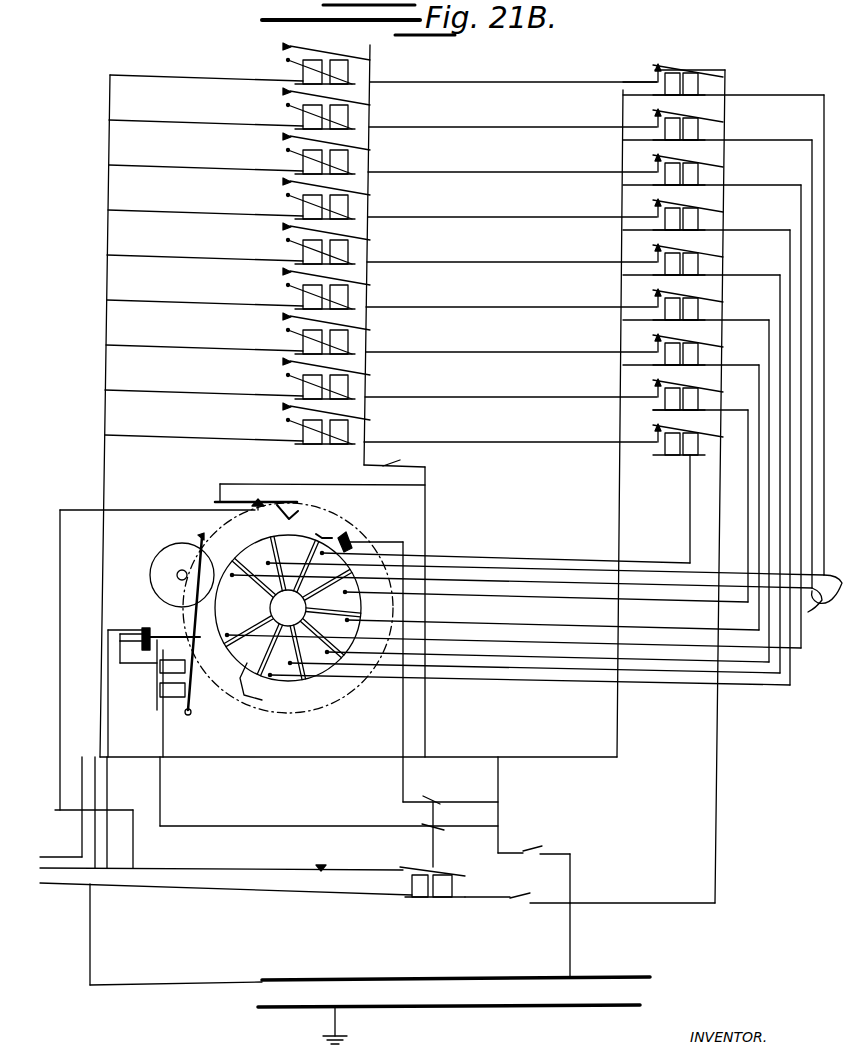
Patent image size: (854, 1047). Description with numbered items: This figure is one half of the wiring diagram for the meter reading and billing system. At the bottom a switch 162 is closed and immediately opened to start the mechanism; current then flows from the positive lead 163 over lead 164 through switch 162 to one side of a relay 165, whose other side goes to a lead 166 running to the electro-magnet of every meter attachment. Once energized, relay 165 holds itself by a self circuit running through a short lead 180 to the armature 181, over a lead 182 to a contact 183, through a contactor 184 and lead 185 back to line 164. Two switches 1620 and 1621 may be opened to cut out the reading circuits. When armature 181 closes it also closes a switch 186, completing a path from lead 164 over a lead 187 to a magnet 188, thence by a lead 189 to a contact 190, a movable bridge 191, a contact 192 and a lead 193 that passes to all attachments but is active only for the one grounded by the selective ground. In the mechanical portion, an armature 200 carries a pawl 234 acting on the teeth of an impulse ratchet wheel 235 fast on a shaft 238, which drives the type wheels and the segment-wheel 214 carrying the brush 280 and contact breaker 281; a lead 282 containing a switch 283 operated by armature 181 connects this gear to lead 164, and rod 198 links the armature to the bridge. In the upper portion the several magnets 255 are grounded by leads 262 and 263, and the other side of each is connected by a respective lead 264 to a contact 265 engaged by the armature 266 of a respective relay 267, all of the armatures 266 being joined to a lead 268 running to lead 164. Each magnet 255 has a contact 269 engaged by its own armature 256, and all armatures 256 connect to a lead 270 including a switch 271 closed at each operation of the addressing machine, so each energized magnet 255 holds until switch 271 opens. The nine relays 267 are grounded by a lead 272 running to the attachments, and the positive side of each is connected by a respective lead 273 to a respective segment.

The switch 162 is at (510, 896).
The positive lead 163 is at (336, 976).
The lead 164 is at (427, 520).
The relay 165 is at (422, 898).
The lead 166 is at (280, 900).
The short lead 180 is at (455, 893).
The armature 181 is at (436, 866).
The lead 182 is at (248, 870).
The contact 183 is at (268, 514).
The contactor 184 is at (224, 508).
The lead 185 is at (322, 484).
The switch 186 is at (436, 830).
The lead 187 is at (286, 824).
The magnet 188 is at (172, 700).
The lead 189 is at (124, 668).
The contact 190 is at (158, 672).
The movable bridge 191 is at (146, 628).
The contact 192 is at (135, 628).
The lead 193 is at (108, 738).
The rod 198 is at (182, 632).
The armature 200 is at (196, 696).
The rotor wheel 214 is at (262, 700).
The pawl 234 is at (196, 534).
The impulse ratchet wheel 235 is at (156, 558).
The shaft 238 is at (177, 575).
The magnet 255 is at (300, 344).
The armature 256 is at (350, 47).
The lead 262 is at (226, 76).
The lead 263 is at (104, 465).
The lead 264 is at (479, 92).
The contact 265 is at (654, 72).
The armature 266 is at (680, 70).
The relay 267 is at (705, 80).
The lead 268 is at (716, 778).
The contact 269 is at (284, 414).
The lead 270 is at (366, 338).
The switch 271 is at (416, 462).
The lead 272 is at (617, 480).
The lead 273 is at (528, 562).
The brush 280 is at (326, 532).
The contact breaker 281 is at (352, 538).
The lead 282 is at (400, 748).
The switch 283 is at (436, 796).
The switch 1620 is at (530, 850).
The switch 1621 is at (330, 870).